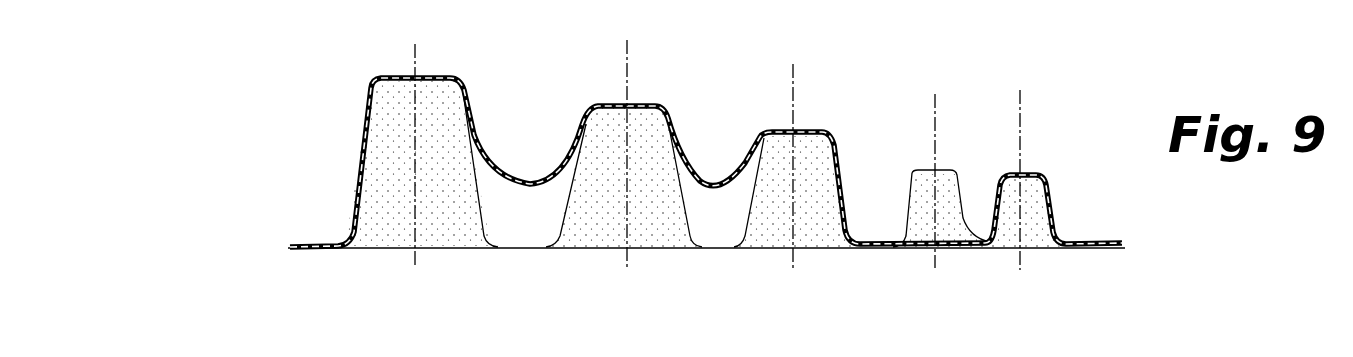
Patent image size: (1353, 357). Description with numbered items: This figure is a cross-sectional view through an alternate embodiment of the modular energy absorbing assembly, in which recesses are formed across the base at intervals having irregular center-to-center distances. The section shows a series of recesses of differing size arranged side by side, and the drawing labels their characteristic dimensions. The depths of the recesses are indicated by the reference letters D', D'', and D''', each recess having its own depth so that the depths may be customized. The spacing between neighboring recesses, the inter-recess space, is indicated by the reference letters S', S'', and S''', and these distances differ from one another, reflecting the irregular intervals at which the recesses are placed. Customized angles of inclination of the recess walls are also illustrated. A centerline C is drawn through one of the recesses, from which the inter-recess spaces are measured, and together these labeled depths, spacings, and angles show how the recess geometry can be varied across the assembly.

The inter-recess space S' is at (521, 52).
The inter-recess space S'' is at (710, 70).
The inter-recess space S''' is at (906, 84).
The recess depth D' is at (330, 165).
The recess depth D'' is at (554, 176).
The recess depth D''' is at (730, 189).
The centerline C is at (626, 152).